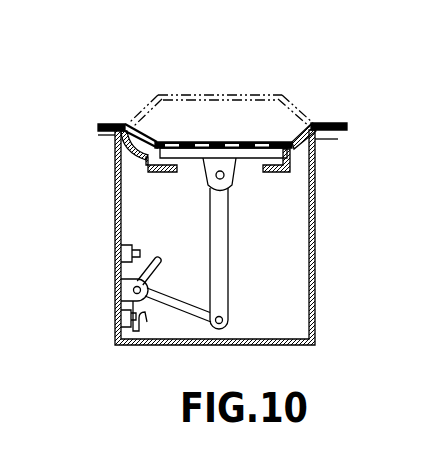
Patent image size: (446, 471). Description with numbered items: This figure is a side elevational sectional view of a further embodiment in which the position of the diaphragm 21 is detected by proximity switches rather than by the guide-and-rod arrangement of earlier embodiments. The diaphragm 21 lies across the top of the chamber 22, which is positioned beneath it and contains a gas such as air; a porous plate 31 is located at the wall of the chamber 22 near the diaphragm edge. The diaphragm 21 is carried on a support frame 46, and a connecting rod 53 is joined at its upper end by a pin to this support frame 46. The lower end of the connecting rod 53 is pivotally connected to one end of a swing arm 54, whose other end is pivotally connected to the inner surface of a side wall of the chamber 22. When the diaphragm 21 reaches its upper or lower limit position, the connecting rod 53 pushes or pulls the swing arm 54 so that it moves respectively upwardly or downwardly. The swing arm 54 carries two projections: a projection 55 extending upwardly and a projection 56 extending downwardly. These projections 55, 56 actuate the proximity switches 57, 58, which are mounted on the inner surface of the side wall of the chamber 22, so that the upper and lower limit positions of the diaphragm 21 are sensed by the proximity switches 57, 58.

The diaphragm 21 is at (213, 153).
The chamber 22 is at (316, 221).
The porous plate 31 is at (127, 146).
The support frame 46 is at (187, 156).
The connecting rod 53 is at (221, 247).
The swing arm 54 is at (187, 308).
The projection 55 is at (153, 262).
The projection 56 is at (142, 316).
The proximity switch 57 is at (120, 253).
The proximity switch 58 is at (120, 318).